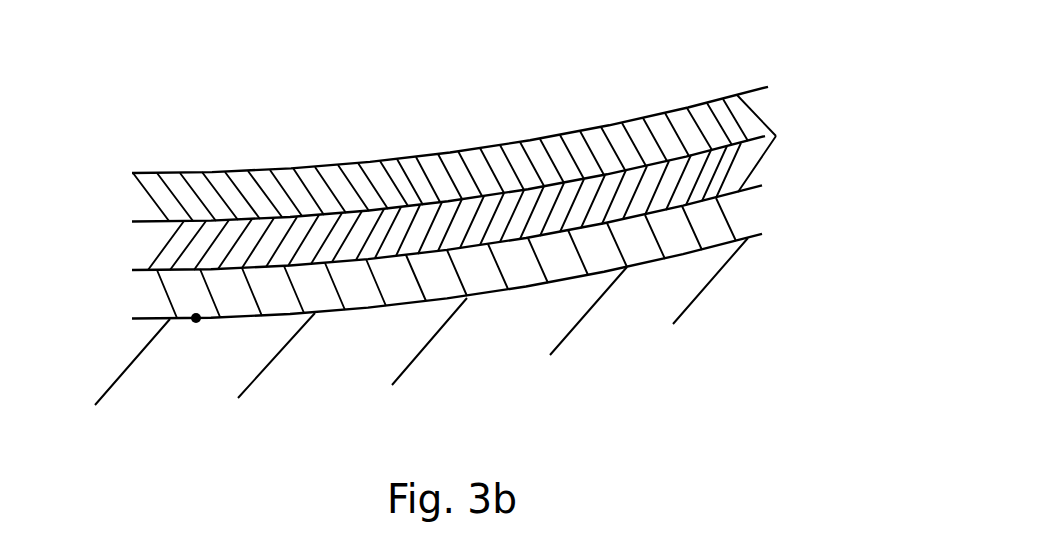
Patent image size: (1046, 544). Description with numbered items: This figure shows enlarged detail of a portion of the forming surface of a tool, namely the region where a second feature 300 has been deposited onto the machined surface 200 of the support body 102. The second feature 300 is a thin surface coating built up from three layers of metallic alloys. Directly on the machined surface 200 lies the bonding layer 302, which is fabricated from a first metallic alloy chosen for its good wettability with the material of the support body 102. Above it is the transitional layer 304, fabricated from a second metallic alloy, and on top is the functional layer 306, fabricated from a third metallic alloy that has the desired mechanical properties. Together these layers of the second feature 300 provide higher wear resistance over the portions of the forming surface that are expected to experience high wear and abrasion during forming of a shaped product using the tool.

The second feature 300 is at (463, 203).
The bonding layer 302 is at (123, 273).
The transitional layer 304 is at (123, 223).
The functional layer 306 is at (123, 173).
The machined surface 200 is at (196, 320).
The support body 102 is at (642, 330).